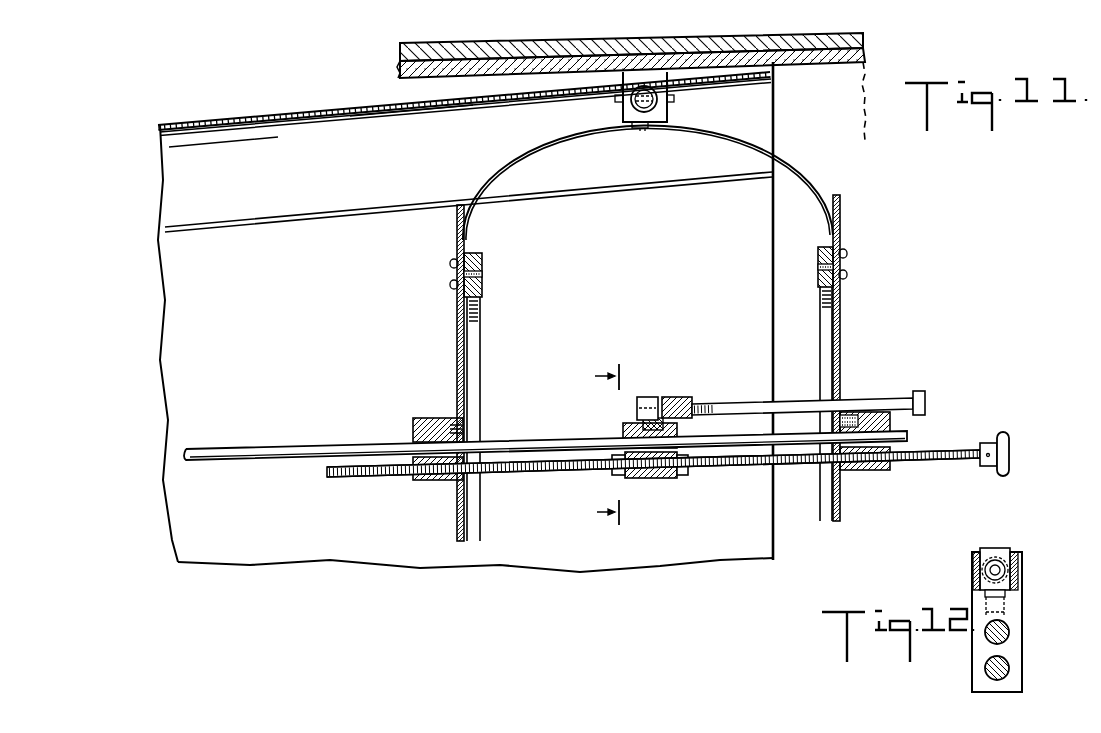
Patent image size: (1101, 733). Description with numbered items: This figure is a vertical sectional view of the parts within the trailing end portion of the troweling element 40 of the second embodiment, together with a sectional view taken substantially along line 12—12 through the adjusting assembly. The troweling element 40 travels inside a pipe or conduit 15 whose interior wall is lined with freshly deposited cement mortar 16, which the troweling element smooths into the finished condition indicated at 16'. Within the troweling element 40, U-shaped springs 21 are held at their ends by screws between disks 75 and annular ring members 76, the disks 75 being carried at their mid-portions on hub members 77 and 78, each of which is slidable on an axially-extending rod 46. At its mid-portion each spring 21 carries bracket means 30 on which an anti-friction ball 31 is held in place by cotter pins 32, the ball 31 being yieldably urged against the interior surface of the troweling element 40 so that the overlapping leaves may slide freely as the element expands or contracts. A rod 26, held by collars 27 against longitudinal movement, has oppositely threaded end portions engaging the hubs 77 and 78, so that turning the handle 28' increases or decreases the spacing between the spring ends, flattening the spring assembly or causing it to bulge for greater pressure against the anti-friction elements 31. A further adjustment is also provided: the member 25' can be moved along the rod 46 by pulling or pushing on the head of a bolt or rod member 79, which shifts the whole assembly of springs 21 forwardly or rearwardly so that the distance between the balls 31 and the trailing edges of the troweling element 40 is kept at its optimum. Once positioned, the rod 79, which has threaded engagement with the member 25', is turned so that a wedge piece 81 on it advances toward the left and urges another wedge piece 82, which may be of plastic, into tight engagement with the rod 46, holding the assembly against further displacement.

In FIG. 11, the pipe or conduit 15 is at (674, 44).
In FIG. 11, the cement mortar lining 16 is at (631, 45).
In FIG. 11, the troweled smooth mortar 16' is at (841, 101).
In FIG. 11, the troweling element 40 is at (313, 113).
In FIG. 11, the U-shaped springs 21 is at (554, 140).
In FIG. 11, the bracket means 30 is at (670, 123).
In FIG. 11, the anti-friction balls 31 is at (672, 103).
In FIG. 11, the cotter pins 32 is at (616, 100).
In FIG. 11, the disks 75 is at (457, 318).
In FIG. 11, the annular ring members 76 is at (482, 275).
In FIG. 11, the hub member 77 is at (444, 400).
In FIG. 11, the hub member 78 is at (892, 418).
In FIG. 11, the member 25' is at (624, 425).
In FIG. 12, the member 25' is at (1021, 646).
In FIG. 11, the wedge piece 82 is at (680, 428).
In FIG. 12, the wedge piece 82 is at (1012, 614).
In FIG. 11, the wedge piece 81 is at (650, 399).
In FIG. 12, the wedge piece 81 is at (1008, 586).
In FIG. 11, the bolt or rod member 79 is at (870, 397).
In FIG. 12, the bolt or rod member 79 is at (1000, 572).
In FIG. 11, the axially-extending rod 46 is at (368, 445).
In FIG. 12, the axially-extending rod 46 is at (1008, 632).
In FIG. 11, the collars 27 is at (687, 472).
In FIG. 11, the rod 26 is at (722, 465).
In FIG. 12, the rod 26 is at (1008, 668).
In FIG. 11, the handle 28' is at (982, 470).
In FIG. 11, the section line 12— 12 is at (592, 444).